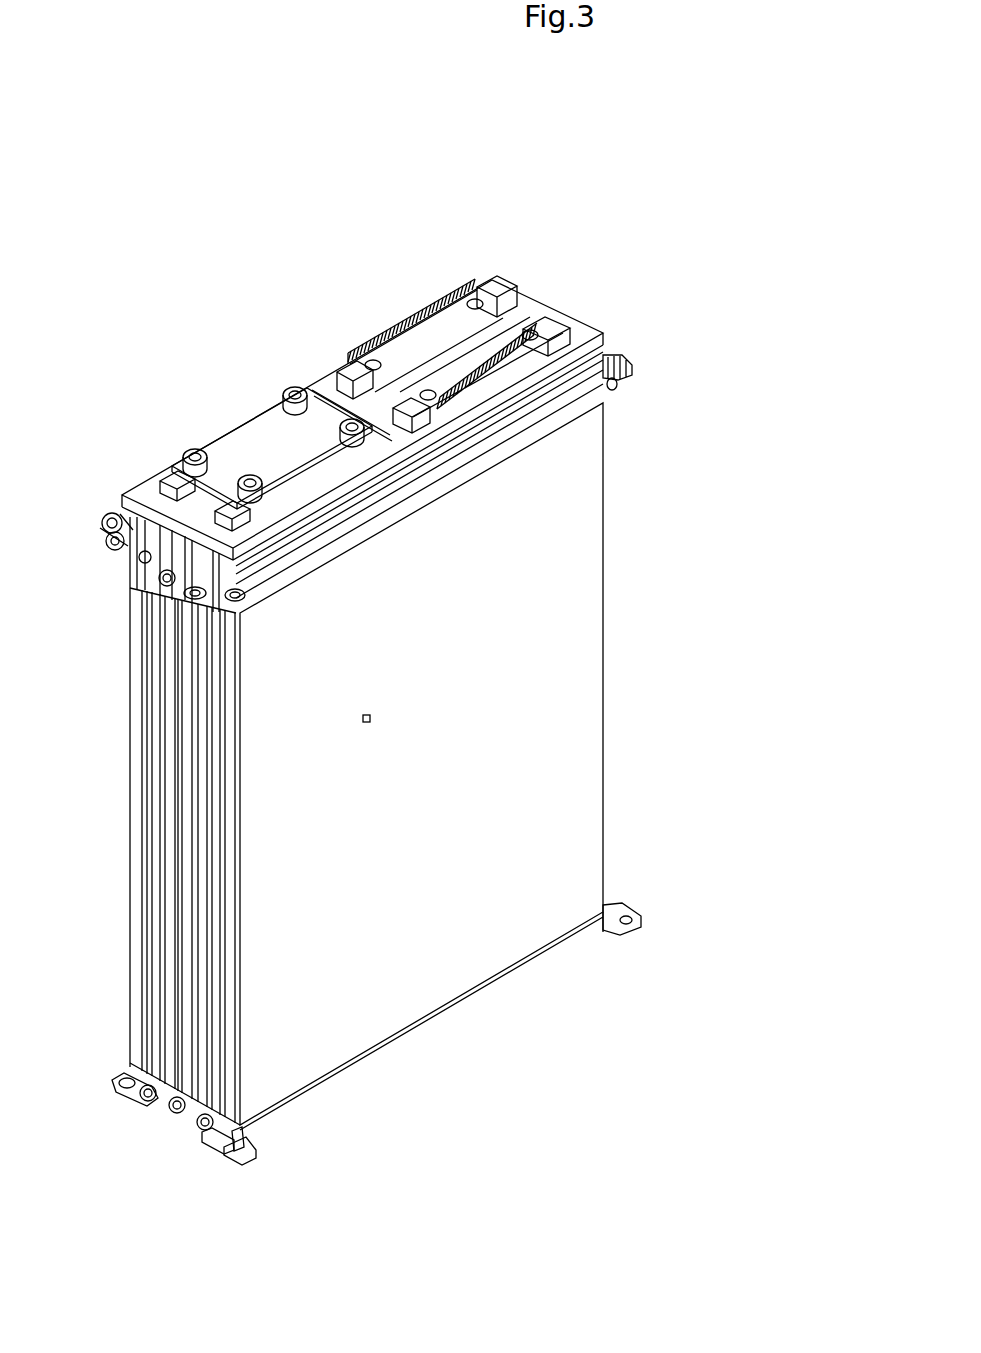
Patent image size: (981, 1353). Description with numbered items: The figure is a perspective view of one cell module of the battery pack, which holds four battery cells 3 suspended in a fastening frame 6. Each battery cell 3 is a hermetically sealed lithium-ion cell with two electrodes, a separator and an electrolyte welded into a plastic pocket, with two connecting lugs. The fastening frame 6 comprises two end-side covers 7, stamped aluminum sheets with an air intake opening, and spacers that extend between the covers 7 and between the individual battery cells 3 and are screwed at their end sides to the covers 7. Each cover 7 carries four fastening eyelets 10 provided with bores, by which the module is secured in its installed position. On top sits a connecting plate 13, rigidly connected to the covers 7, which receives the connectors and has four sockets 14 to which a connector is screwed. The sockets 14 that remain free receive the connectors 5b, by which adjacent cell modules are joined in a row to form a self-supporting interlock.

The battery cell 3 is at (486, 676).
The connector 5b is at (252, 452).
The fastening frame 6 is at (284, 1103).
The cover 7 is at (132, 707).
The fastening eyelet 10 is at (633, 367).
The connecting plate 13 is at (572, 322).
The socket 14 is at (438, 302).